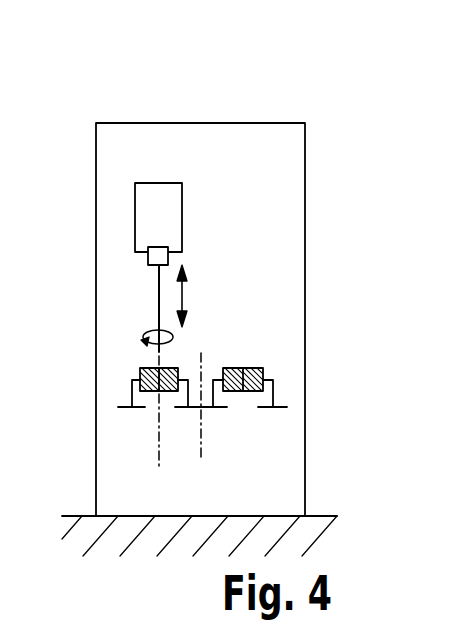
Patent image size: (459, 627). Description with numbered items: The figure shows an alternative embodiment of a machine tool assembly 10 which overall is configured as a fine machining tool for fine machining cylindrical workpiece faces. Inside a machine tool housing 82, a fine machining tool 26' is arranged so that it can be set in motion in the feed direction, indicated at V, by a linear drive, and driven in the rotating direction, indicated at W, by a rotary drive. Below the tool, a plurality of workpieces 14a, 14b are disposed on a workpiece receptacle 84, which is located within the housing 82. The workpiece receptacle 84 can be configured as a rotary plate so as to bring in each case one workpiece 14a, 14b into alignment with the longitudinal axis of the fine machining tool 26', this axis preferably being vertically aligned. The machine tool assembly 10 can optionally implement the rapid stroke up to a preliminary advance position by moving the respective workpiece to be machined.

The machine tool assembly 10 is at (325, 62).
The machine tool housing 82 is at (283, 163).
The fine machining tool 26' is at (84, 308).
The workpiece 14a is at (140, 372).
The workpiece 14b is at (263, 371).
The workpiece receptacle 84 is at (213, 408).
The feed direction V is at (186, 296).
The rotating direction W is at (176, 336).